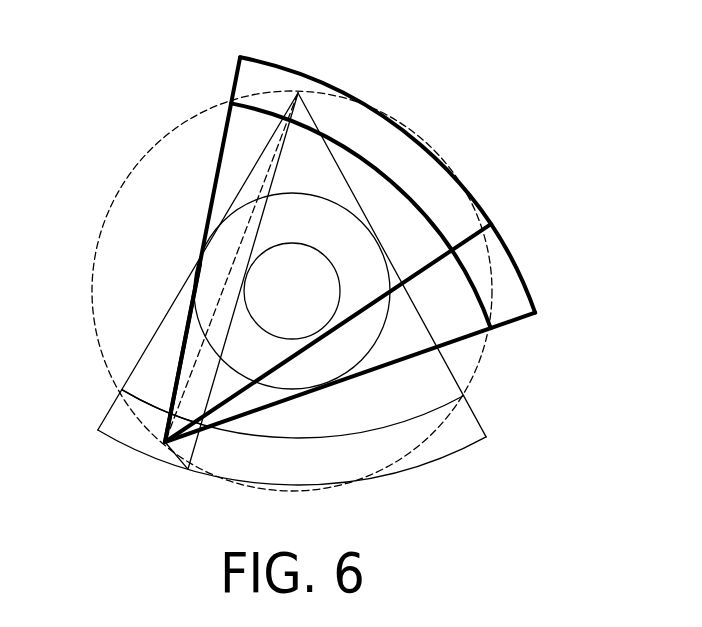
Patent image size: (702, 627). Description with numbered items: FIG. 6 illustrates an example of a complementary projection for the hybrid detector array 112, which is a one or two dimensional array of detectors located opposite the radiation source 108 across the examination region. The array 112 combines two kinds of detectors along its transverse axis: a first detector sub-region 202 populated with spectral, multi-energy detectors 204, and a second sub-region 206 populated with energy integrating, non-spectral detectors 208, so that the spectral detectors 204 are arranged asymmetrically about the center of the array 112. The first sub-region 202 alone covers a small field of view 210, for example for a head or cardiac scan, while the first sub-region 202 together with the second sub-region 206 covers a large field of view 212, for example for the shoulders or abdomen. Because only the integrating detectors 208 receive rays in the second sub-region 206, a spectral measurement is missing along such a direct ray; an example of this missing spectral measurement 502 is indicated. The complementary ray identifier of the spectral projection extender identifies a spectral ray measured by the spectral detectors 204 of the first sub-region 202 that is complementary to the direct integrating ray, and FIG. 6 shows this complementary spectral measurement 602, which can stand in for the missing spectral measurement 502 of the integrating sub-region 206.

The radiation source 108 is at (298, 93).
The one or two dimensional array 112 is at (522, 316).
The first detector sub-region 202 is at (445, 170).
The spectral detectors 204 is at (388, 150).
The second sub-region 206 is at (507, 251).
The energy integrating detectors 208 is at (155, 433).
The small field of view 210 is at (314, 305).
The large field of view 212 is at (314, 227).
The missing spectral measurement 502 is at (172, 403).
The complementary spectral measurement 602 is at (290, 122).